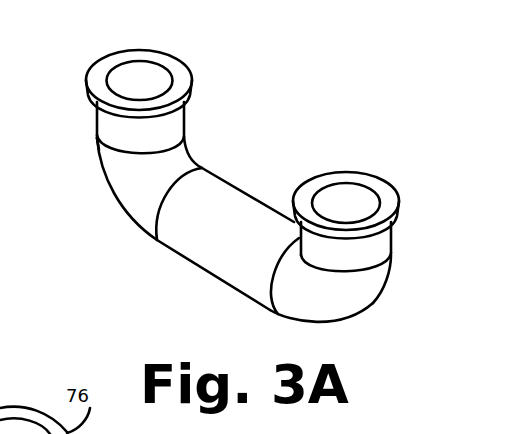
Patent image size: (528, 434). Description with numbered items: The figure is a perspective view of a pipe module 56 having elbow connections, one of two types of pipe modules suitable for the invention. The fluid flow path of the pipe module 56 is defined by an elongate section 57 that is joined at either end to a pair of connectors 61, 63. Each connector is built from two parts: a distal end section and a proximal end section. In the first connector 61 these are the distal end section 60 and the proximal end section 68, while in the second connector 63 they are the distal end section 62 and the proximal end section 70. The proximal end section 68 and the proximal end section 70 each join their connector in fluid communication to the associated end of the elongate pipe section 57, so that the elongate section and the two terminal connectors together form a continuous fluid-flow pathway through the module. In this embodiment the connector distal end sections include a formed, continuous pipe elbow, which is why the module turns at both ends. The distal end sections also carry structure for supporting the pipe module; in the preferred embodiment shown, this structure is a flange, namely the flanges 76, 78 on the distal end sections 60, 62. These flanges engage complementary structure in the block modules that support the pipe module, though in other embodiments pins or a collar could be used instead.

The pipe module 56 is at (233, 182).
The elongate section 57 is at (183, 265).
The distal end section 60 is at (97, 125).
The connector 61 is at (94, 144).
The distal end section 62 is at (392, 242).
The connector 63 is at (383, 296).
The proximal end section 68 is at (113, 198).
The proximal end section 70 is at (352, 320).
The flange 76 is at (185, 67).
The flange 78 is at (399, 201).